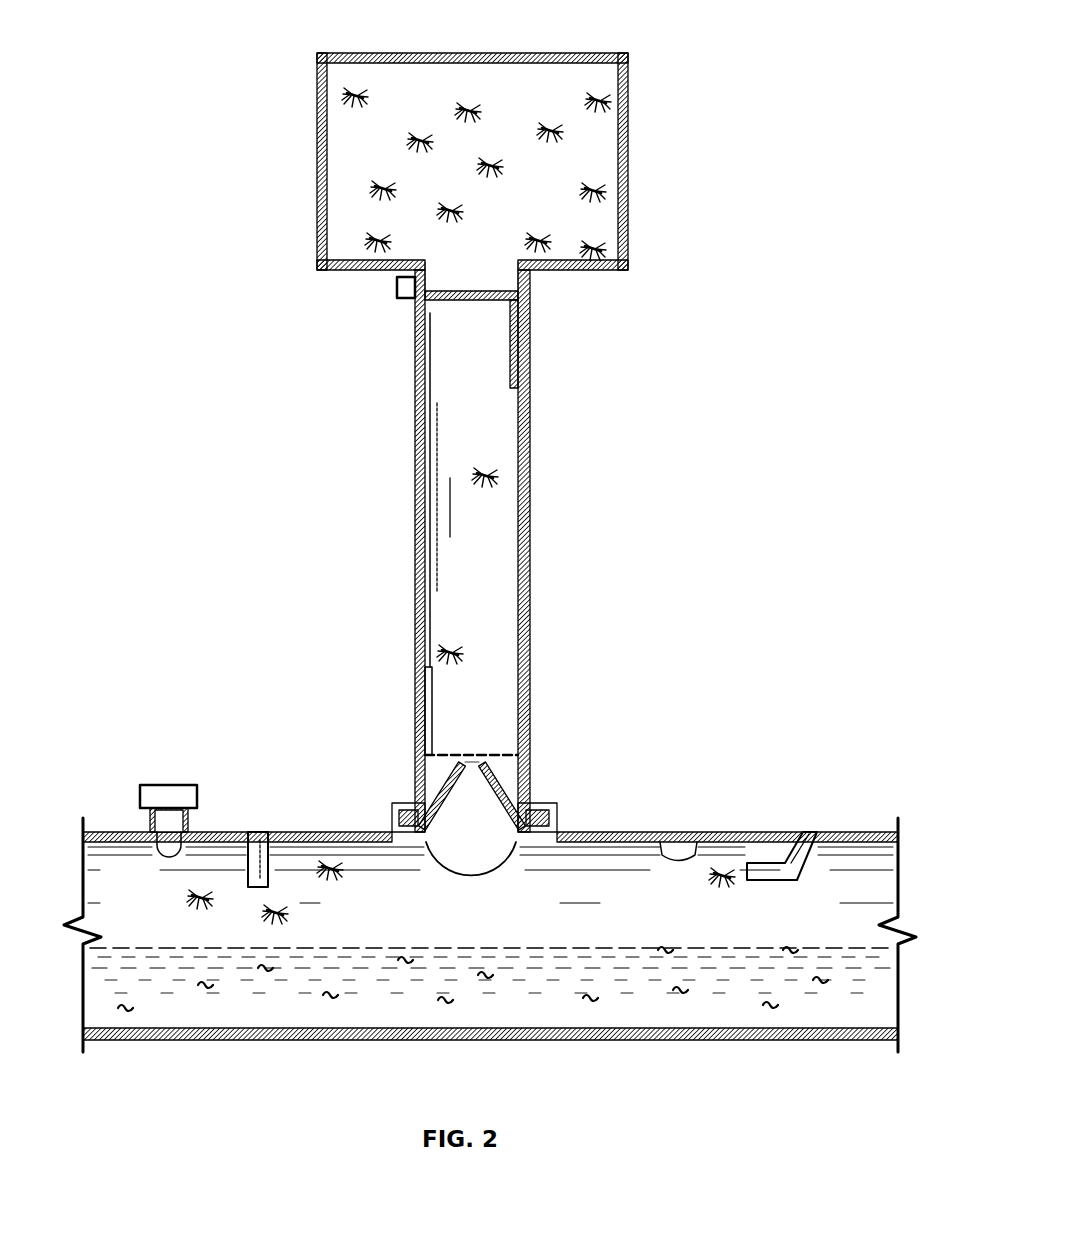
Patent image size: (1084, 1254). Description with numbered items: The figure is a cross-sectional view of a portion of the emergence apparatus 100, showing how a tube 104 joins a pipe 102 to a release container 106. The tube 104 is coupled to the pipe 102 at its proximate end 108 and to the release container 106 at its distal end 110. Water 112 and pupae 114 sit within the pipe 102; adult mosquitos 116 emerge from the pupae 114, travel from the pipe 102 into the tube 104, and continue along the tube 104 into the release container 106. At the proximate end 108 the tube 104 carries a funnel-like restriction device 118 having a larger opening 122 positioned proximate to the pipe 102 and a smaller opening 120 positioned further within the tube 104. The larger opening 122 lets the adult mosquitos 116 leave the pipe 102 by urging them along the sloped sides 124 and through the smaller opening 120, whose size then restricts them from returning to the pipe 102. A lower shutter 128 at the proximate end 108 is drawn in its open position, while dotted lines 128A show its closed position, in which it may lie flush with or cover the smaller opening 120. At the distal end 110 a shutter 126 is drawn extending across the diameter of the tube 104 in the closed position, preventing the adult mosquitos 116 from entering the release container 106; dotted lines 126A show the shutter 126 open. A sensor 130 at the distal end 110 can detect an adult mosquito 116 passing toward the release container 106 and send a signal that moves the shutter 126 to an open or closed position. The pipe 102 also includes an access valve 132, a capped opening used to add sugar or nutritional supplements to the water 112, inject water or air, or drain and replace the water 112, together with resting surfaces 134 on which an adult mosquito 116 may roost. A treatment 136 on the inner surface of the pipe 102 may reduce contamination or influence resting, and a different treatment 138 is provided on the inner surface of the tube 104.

The emergence apparatus 100 is at (252, 588).
The pipe 102 is at (850, 832).
The tube 104 is at (532, 527).
The release container 106 is at (628, 57).
The proximate end 108 is at (552, 788).
The distal end 110 is at (552, 302).
The water 112 is at (153, 980).
The pupae 114 is at (205, 983).
The adult mosquitos 116 is at (350, 93).
The restriction device 118 is at (418, 737).
The smaller opening 120 is at (471, 754).
The larger opening 122 is at (462, 831).
The sloped sides 124 is at (500, 778).
The shutter 126 is at (472, 302).
The dotted lines 126A is at (516, 359).
The lower shutter 128 is at (418, 708).
The dotted lines 128A is at (498, 752).
The sensor 130 is at (398, 290).
The access valve 132 is at (160, 790).
The resting surfaces 134 is at (245, 838).
The treatment 136 is at (700, 850).
The different treatment 138 is at (512, 431).